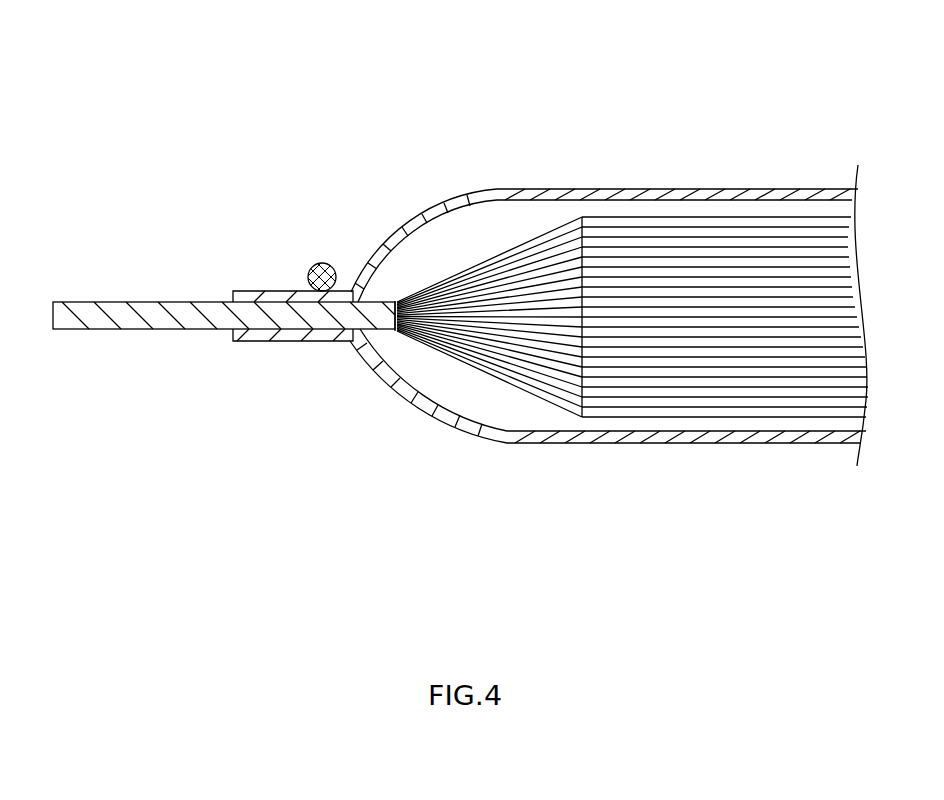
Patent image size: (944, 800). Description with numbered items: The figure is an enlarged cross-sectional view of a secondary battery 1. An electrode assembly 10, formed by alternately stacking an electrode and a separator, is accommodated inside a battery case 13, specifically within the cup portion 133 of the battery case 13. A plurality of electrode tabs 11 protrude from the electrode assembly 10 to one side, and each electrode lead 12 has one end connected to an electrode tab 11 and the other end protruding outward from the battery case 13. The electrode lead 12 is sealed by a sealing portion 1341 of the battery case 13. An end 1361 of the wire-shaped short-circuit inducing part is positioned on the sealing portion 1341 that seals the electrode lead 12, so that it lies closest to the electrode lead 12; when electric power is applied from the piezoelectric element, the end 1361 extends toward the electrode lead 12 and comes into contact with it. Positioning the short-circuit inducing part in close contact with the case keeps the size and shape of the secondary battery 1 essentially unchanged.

The secondary battery 1 is at (564, 84).
The electrode assembly 10 is at (720, 380).
The electrode tab 11 is at (513, 266).
The electrode lead 12 is at (138, 330).
The battery case 13 is at (727, 196).
The cup portion 133 is at (420, 417).
The sealing portion 1341 is at (290, 341).
The end of short-circuit inducing part 1361 is at (322, 262).